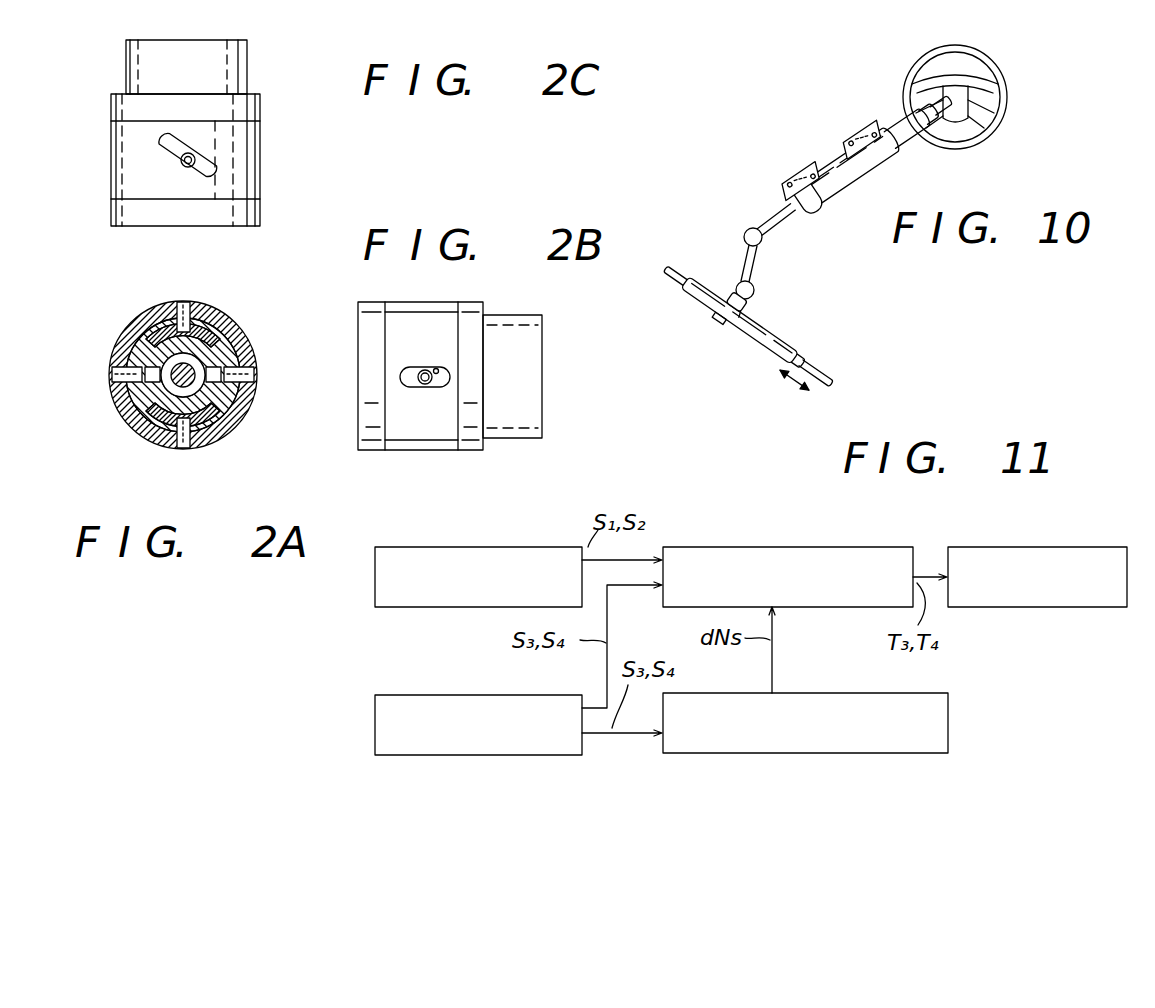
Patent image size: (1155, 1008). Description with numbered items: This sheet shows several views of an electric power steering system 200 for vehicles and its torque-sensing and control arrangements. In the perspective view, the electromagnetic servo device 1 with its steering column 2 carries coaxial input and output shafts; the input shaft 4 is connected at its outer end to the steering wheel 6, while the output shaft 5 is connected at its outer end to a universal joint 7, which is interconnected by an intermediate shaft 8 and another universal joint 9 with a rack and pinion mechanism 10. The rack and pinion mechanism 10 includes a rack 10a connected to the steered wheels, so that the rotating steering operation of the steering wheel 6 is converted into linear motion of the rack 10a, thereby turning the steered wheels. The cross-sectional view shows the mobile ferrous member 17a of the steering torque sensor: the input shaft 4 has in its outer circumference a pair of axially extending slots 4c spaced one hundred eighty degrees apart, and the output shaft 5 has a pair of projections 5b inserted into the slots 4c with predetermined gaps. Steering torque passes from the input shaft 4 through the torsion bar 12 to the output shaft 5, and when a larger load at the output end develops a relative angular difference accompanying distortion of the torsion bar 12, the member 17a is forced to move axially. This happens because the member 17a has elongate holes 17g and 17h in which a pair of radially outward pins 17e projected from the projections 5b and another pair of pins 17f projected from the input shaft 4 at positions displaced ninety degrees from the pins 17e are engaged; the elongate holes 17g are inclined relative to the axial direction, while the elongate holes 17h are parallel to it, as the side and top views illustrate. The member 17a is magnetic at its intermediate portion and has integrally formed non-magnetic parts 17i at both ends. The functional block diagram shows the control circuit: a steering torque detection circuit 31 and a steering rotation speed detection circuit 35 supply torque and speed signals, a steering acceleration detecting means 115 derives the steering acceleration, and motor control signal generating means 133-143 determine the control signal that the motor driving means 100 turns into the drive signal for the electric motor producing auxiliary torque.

In FIG. 2C, the mobile ferrous member 17a is at (260, 160).
In FIG. 2A, the mobile ferrous member 17a is at (235, 320).
In FIG. 2B, the mobile ferrous member 17a is at (425, 450).
In FIG. 2C, the non-magnetic parts 17i is at (253, 108).
In FIG. 2B, the non-magnetic parts 17i is at (375, 450).
In FIG. 2C, the elongate holes 17g is at (175, 143).
In FIG. 2C, the pins 17e is at (205, 153).
In FIG. 2A, the pins 17e is at (190, 305).
In FIG. 2B, the elongate holes 17h is at (440, 370).
In FIG. 2A, the pins 17f is at (257, 375).
In FIG. 2B, the pins 17f is at (425, 385).
In FIG. 2A, the input shaft 4 is at (245, 345).
In FIG. 10, the input shaft 4 is at (946, 110).
In FIG. 2A, the slots 4c is at (213, 330).
In FIG. 2A, the projections 5b is at (158, 305).
In FIG. 2A, the torsion bar 12 is at (193, 383).
In FIG. 10, the electric power steering system 200 is at (784, 132).
In FIG. 10, the electromagnetic servo device 1 is at (837, 173).
In FIG. 10, the steering column 2 is at (900, 125).
In FIG. 10, the steering wheel 6 is at (1007, 82).
In FIG. 10, the output shaft 5 is at (780, 228).
In FIG. 10, the universal joint 7 is at (752, 228).
In FIG. 10, the intermediate shaft 8 is at (752, 265).
In FIG. 10, the universal joint 9 is at (740, 285).
In FIG. 10, the rack and pinion mechanism 10 is at (783, 338).
In FIG. 10, the rack 10a is at (814, 363).
In FIG. 11, the steering torque detection circuit 31 is at (505, 547).
In FIG. 11, the steering rotation speed detection circuit 35 is at (420, 695).
In FIG. 11, the motor control signal generating means 133-143 is at (738, 547).
In FIG. 11, the motor driving means 100 is at (1085, 607).
In FIG. 11, the steering acceleration detecting means 115 is at (778, 693).